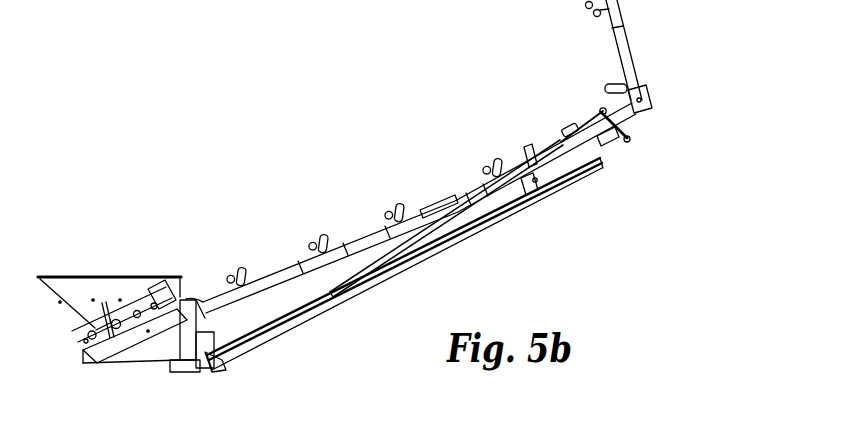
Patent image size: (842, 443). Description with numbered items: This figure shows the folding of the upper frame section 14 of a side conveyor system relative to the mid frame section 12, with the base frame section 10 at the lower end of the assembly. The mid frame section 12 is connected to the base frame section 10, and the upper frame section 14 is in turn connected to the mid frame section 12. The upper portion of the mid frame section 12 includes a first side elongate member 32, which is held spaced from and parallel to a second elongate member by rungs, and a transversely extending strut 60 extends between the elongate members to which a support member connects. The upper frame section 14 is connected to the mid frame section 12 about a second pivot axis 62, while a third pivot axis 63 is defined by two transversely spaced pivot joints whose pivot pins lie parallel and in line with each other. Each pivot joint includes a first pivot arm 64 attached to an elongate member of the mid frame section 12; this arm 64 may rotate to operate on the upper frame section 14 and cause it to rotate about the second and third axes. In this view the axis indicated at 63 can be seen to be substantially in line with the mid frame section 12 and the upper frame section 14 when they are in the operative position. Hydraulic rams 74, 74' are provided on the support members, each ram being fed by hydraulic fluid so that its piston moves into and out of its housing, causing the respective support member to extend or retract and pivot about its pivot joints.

The base frame section 10 is at (180, 253).
The mid frame section 12 is at (612, 86).
The upper frame section 14 is at (664, 103).
The first side elongate member 32 is at (457, 207).
The transversely extending strut 60 is at (529, 194).
The second pivot axis 62 is at (634, 112).
The third pivot axis 63 is at (601, 109).
The first pivot arm 64 is at (617, 140).
The hydraulic ram 74 is at (404, 287).
The hydraulic ram 74' is at (404, 272).